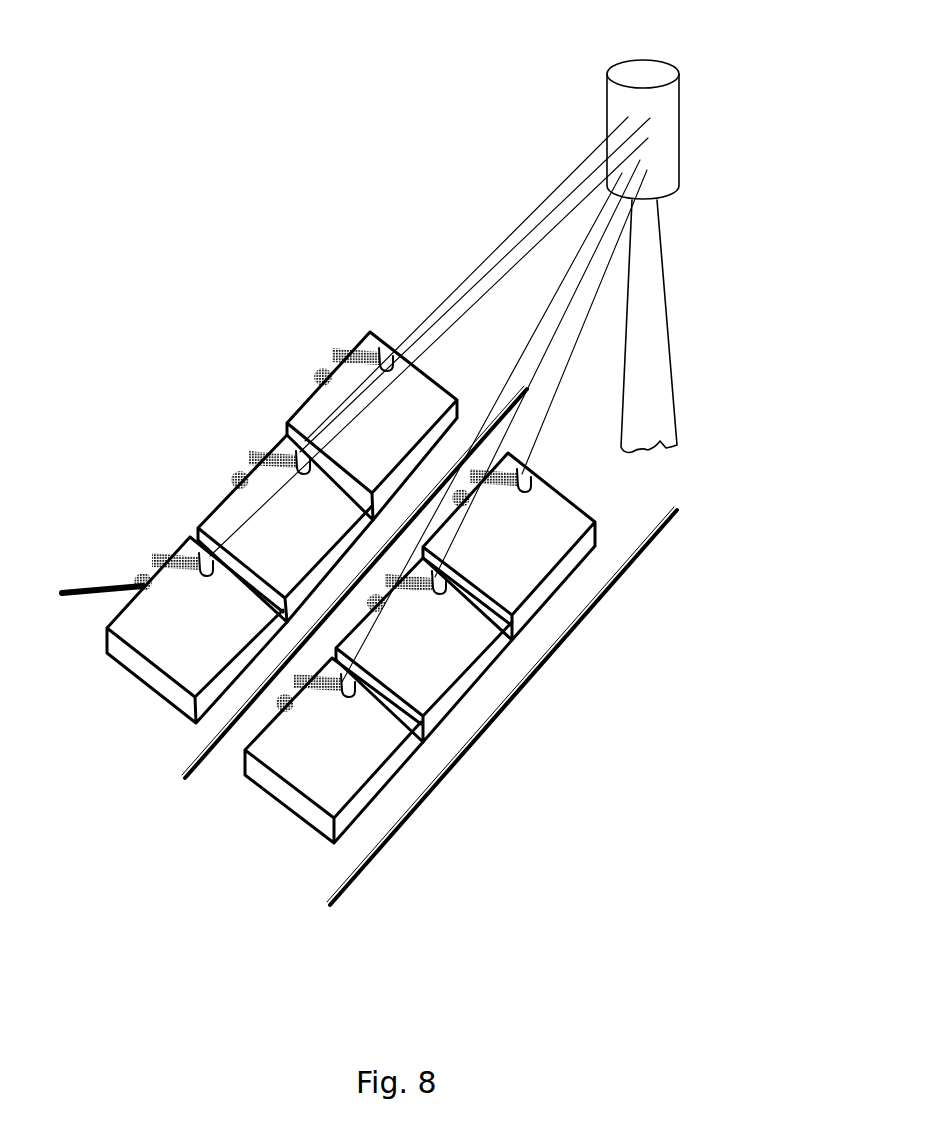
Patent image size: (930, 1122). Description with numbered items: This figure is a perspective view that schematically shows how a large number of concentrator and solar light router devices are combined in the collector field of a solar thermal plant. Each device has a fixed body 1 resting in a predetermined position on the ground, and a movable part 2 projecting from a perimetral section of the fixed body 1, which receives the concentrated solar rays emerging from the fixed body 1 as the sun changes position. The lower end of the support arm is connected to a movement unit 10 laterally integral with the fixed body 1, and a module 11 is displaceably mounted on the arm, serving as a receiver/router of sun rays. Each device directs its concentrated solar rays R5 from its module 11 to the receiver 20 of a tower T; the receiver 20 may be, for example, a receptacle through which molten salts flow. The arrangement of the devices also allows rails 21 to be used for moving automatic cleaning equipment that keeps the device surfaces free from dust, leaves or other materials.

The fixed body 1 is at (118, 683).
The movable part 2 is at (232, 462).
The movement unit 10 is at (86, 596).
The module 11 is at (287, 450).
The receiver 20 is at (678, 125).
The rails 21 is at (195, 760).
The tower T is at (658, 278).
The concentrated solar rays R5 is at (497, 225).